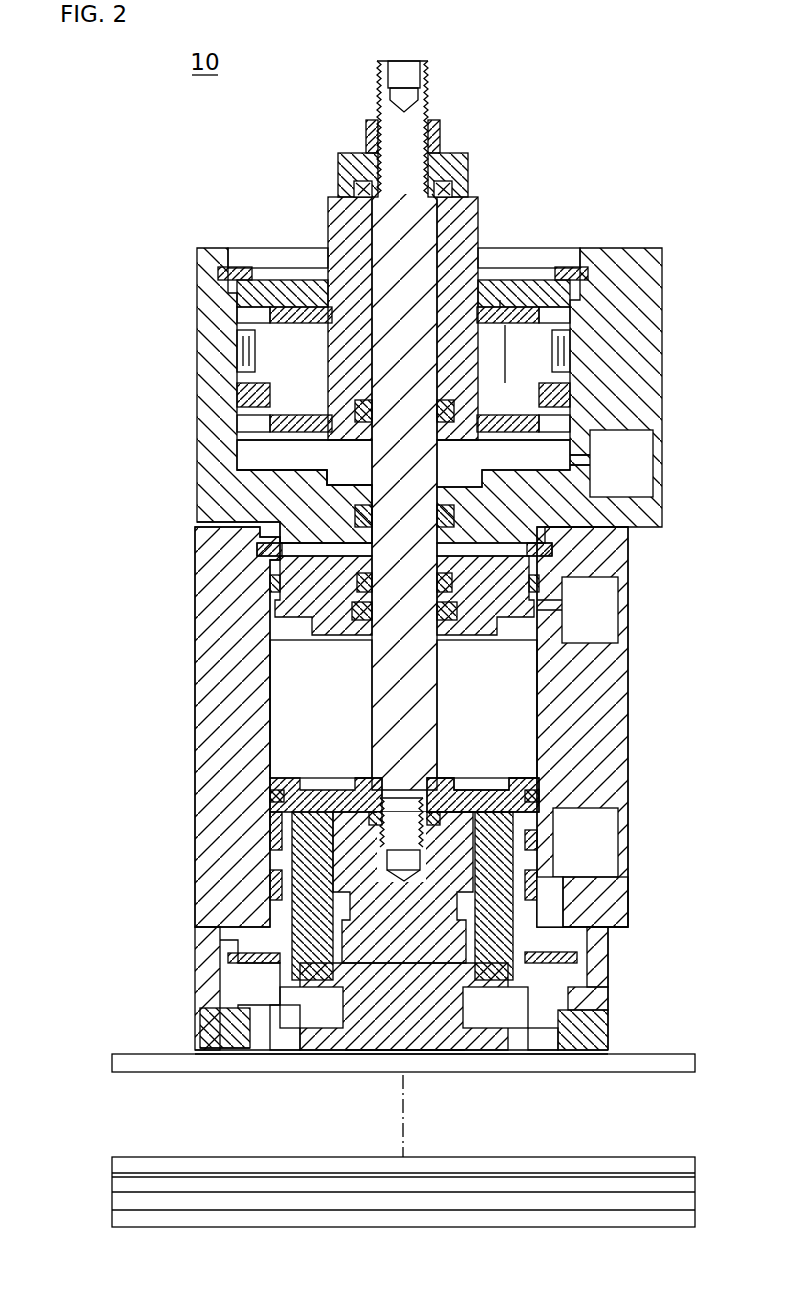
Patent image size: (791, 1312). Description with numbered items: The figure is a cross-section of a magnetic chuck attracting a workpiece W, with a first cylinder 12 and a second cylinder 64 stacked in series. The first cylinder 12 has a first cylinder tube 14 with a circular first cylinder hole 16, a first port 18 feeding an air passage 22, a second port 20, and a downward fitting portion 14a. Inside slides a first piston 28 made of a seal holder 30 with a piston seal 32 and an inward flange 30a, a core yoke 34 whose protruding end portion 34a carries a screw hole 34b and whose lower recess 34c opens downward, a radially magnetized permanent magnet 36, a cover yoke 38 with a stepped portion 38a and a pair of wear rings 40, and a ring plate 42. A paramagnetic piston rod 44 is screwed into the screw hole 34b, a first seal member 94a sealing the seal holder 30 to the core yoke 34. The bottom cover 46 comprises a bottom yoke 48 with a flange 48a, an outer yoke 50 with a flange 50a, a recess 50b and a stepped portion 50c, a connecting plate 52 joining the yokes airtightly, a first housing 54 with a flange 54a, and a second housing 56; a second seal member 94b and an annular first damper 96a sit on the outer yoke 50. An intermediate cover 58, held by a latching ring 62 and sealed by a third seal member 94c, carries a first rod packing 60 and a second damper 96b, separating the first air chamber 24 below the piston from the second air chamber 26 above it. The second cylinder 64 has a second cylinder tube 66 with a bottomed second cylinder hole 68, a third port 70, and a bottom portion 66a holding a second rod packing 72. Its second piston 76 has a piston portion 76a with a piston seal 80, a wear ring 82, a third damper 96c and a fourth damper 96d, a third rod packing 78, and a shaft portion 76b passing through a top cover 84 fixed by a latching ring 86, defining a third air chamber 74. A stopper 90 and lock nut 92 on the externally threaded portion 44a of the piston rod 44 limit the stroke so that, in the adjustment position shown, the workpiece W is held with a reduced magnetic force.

The first cylinder 12 is at (188, 545).
The first cylinder tube 14 is at (225, 655).
The fitting portion 14a is at (598, 945).
The first cylinder hole 16 is at (285, 700).
The first port 18 is at (605, 840).
The second port 20 is at (605, 612).
The air passage 22 is at (585, 905).
The first air chamber 24 is at (285, 1032).
The second air chamber 26 is at (580, 715).
The first piston 28 is at (268, 830).
The seal holder 30 is at (300, 780).
The flange 30a is at (470, 780).
The piston seal 32 is at (268, 795).
The core yoke 34 is at (403, 855).
The protruding end portion 34a is at (365, 785).
The screw hole 34b is at (405, 800).
The recess 34c is at (366, 950).
The permanent magnet 36 is at (300, 870).
The cover yoke 38 is at (534, 840).
The stepped portion 38a is at (275, 890).
The wear rings 40 is at (545, 882).
The ring plate 42 is at (308, 975).
The piston rod 44 is at (445, 425).
The externally threaded portion 44a is at (441, 132).
The bottom cover 46 is at (374, 1058).
The bottom yoke 48 is at (422, 1052).
The flange 48a is at (457, 1052).
The outer yoke 50 is at (545, 1012).
The flange 50a is at (590, 992).
The recess 50b is at (575, 1052).
The stepped portion 50c is at (540, 1052).
The connecting plate 52 is at (300, 1038).
The first housing 54 is at (210, 985).
The flange 54a is at (222, 1020).
The second housing 56 is at (222, 1030).
The intermediate cover 58 is at (505, 617).
The first rod packing 60 is at (452, 583).
The latching ring 62 is at (554, 550).
The second cylinder 64 is at (183, 292).
The second cylinder tube 66 is at (222, 392).
The bottom portion 66a is at (275, 488).
The second cylinder hole 68 is at (245, 437).
The third port 70 is at (655, 468).
The second rod packing 72 is at (456, 515).
The third air chamber 74 is at (250, 462).
The second piston 76 is at (288, 350).
The piston portion 76a is at (575, 342).
The shaft portion 76b is at (470, 215).
The third rod packing 78 is at (356, 404).
The piston seal 80 is at (567, 395).
The wear ring 82 is at (567, 350).
The top cover 84 is at (592, 292).
The latching ring 86 is at (568, 270).
The stopper 90 is at (342, 176).
The lock nut 92 is at (367, 132).
The first seal member 94a is at (433, 826).
The second seal member 94b is at (240, 955).
The third seal member 94c is at (268, 585).
The first damper 96a is at (565, 1020).
The second damper 96b is at (362, 622).
The third damper 96c is at (500, 432).
The fourth damper 96d is at (512, 322).
The workpiece W is at (672, 1074).